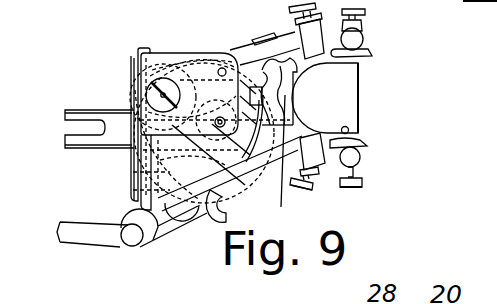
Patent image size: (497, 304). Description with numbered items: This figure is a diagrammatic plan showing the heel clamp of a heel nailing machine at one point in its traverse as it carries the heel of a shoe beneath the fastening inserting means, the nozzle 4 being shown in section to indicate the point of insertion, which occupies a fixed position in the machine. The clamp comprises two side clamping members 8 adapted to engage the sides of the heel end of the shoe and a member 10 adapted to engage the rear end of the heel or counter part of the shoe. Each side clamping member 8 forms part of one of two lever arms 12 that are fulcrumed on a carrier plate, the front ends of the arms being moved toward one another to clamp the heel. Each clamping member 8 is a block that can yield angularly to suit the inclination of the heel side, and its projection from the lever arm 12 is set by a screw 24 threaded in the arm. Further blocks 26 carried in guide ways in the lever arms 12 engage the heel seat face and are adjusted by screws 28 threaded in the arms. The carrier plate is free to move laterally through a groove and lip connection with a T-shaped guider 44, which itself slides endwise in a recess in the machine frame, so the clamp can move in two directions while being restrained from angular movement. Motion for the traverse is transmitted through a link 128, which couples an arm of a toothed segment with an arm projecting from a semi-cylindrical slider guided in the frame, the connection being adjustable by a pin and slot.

The T-shaped guider 44 is at (140, 48).
The lever arm 12 is at (247, 55).
The block 26 is at (320, 62).
The clamping member 8 is at (367, 52).
The nozzle 4 is at (350, 128).
The screw 24 is at (363, 183).
The screw 28 is at (300, 182).
The member 10 is at (290, 159).
The link 128 is at (82, 240).